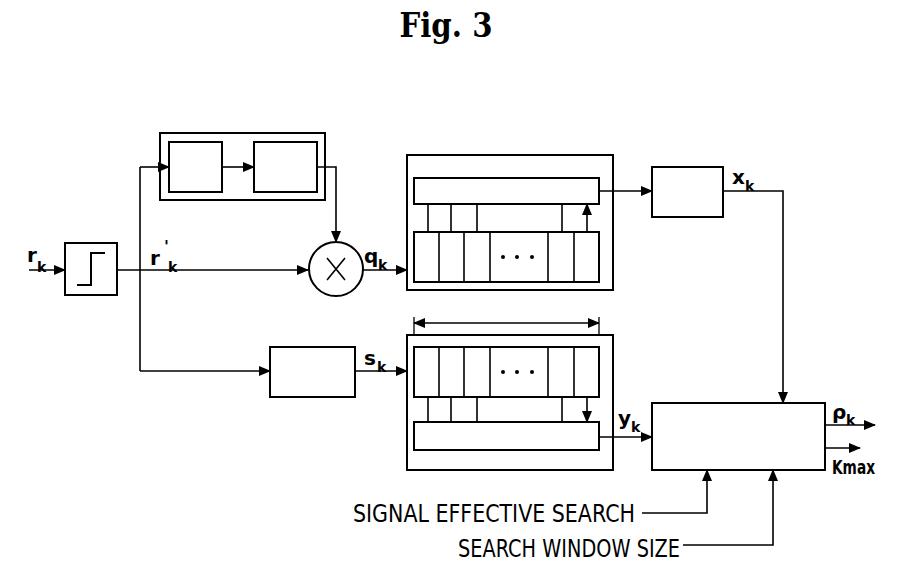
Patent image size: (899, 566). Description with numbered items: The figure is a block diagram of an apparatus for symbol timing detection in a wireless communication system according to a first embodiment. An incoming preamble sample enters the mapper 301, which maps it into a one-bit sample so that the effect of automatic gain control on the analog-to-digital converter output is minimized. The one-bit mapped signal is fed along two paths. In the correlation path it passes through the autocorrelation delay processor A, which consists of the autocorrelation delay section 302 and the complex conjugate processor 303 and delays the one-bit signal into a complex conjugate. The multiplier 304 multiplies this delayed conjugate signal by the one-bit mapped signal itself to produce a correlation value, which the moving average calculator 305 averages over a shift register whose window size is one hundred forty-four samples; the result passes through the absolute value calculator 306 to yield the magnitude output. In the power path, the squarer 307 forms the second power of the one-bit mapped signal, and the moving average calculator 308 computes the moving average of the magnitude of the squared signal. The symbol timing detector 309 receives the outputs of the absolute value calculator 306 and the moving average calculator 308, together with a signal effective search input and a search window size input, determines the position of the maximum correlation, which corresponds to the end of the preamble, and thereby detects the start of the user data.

The mapper 301 is at (90, 243).
The autocorrelation delay section 302 is at (200, 142).
The complex conjugate processor 303 is at (295, 142).
The autocorrelation delay processor A is at (249, 133).
The multiplier 304 is at (352, 249).
The moving average calculator 305 is at (565, 155).
The absolute value calculator 306 is at (682, 167).
The squarer 307 is at (316, 347).
The moving average calculator 308 is at (613, 372).
The symbol timing detector 309 is at (717, 403).